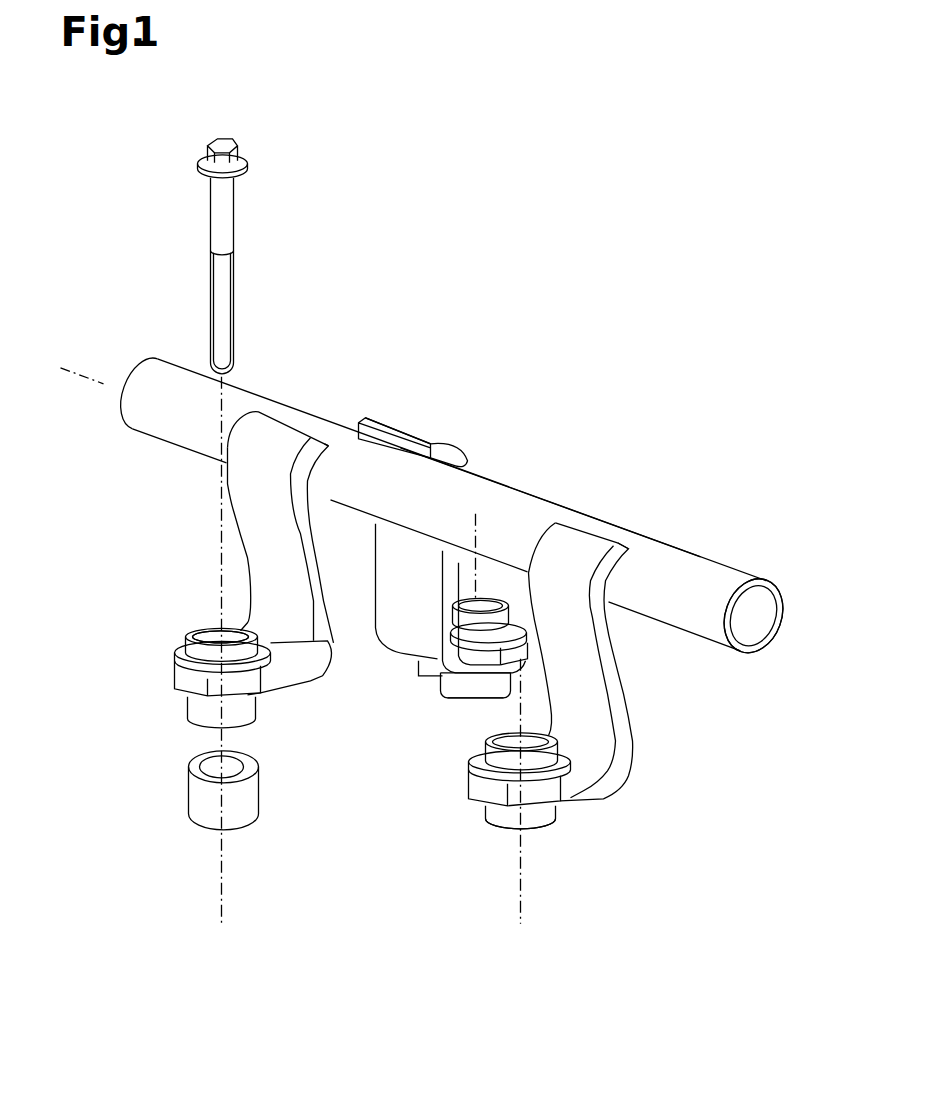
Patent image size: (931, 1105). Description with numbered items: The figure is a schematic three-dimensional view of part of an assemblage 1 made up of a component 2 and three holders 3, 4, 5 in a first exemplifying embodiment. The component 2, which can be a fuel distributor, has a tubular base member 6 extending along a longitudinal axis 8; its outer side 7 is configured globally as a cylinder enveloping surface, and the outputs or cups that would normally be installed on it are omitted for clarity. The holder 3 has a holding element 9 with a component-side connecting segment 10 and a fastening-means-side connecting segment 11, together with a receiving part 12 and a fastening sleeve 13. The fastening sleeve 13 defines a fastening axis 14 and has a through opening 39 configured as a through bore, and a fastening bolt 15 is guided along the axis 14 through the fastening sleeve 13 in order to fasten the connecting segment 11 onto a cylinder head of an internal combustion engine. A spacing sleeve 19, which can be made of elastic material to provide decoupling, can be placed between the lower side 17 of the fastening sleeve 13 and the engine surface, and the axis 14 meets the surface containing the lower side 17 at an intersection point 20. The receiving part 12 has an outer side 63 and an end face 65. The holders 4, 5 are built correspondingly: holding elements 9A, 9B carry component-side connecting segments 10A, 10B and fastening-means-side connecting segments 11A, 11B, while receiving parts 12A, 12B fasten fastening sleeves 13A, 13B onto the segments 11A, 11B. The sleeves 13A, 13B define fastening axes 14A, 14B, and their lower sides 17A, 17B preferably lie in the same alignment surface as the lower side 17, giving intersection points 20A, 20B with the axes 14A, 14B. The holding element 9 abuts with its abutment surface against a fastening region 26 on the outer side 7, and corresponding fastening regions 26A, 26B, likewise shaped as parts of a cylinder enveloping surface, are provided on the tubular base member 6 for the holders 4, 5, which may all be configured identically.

The assemblage 1 is at (700, 315).
The component 2 is at (780, 652).
The holder 3 is at (183, 537).
The holder 4 is at (617, 805).
The holder 5 is at (390, 693).
The tubular base member 6 is at (707, 553).
The outer side 7 is at (693, 583).
The longitudinal axis 8 is at (103, 383).
The holding element 9 is at (250, 540).
The holding element 9A is at (603, 695).
The holding element 9B is at (397, 591).
The component-side connecting segment 10 is at (239, 549).
The component-side connecting segment 10A is at (617, 603).
The component-side connecting segment 10B is at (420, 437).
The fastening-means-side connecting segment 11 is at (172, 693).
The fastening-means-side connecting segment 11A is at (472, 800).
The fastening-means-side connecting segment 11B is at (527, 655).
The receiving part 12 is at (172, 650).
The receiving part 12A is at (570, 757).
The receiving part 12B is at (541, 645).
The fastening sleeve 13 is at (186, 630).
The fastening sleeve 13A is at (540, 817).
The fastening sleeve 13B is at (450, 688).
The fastening axis 14 is at (221, 505).
The fastening axis 14A is at (520, 888).
The fastening axis 14B is at (478, 592).
The fastening bolt 15 is at (222, 219).
The lower side 17 is at (195, 724).
The lower side 17A is at (537, 833).
The lower side 17B is at (525, 735).
The spacing sleeve 19 is at (215, 805).
The intersection point 20 is at (190, 827).
The intersection point 20A is at (518, 830).
The intersection point 20B is at (487, 697).
The fastening region 26 is at (310, 423).
The fastening region 26A is at (660, 550).
The fastening region 26B is at (383, 453).
The through opening 39 is at (207, 630).
The outer side 63 is at (262, 705).
The end face 65 is at (272, 640).